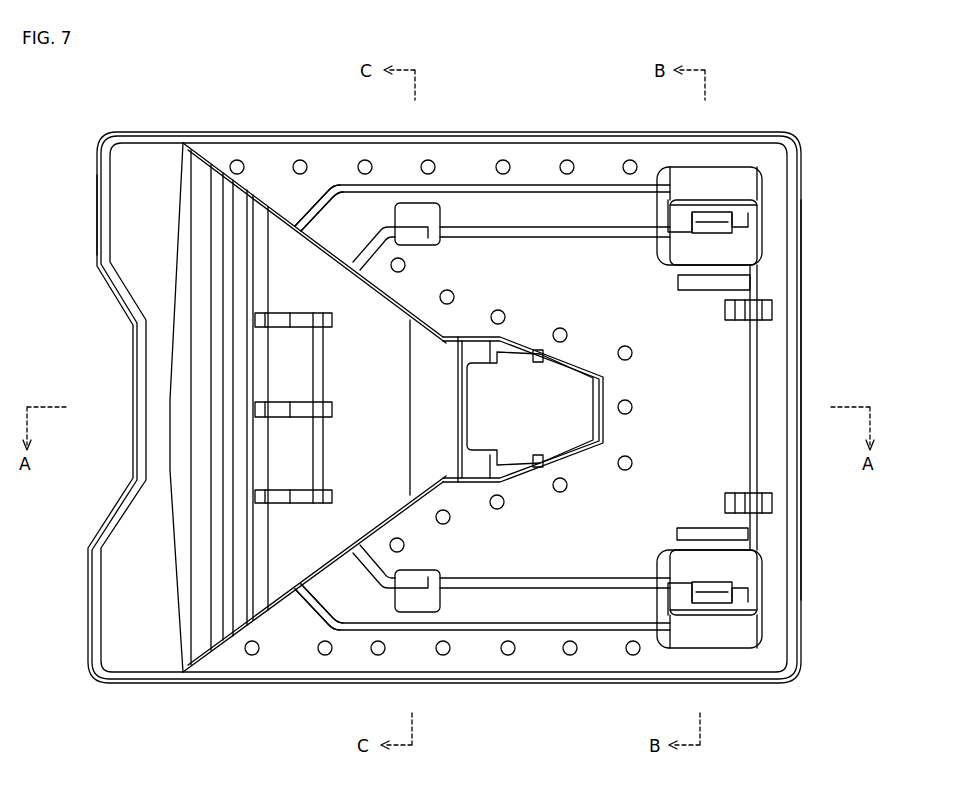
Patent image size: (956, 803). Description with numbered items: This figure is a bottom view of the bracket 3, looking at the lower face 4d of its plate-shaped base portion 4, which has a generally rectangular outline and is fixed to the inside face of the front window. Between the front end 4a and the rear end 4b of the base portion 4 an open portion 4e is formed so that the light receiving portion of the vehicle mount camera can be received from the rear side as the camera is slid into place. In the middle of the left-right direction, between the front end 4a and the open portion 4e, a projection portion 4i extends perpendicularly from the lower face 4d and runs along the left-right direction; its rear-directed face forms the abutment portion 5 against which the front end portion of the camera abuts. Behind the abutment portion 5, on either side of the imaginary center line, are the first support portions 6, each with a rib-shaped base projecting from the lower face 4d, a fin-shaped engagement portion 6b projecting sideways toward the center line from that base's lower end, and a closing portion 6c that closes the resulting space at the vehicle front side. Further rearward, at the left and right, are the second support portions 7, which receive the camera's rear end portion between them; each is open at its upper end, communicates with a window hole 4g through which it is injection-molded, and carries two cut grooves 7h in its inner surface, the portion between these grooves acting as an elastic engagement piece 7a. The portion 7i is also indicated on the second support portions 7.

The bracket 3 is at (818, 138).
The base portion 4 is at (532, 208).
The front end 4a is at (96, 212).
The rear end 4b is at (801, 286).
The lower face 4d is at (730, 372).
The open portion 4e is at (556, 418).
The window hole 4g is at (732, 253).
The projection portion 4i is at (325, 354).
The abutment portion 5 is at (325, 418).
The first support portion 6 is at (432, 210).
The engagement portion 6b is at (423, 607).
The closing portion 6c is at (376, 206).
The second support portion 7 is at (700, 178).
The elastic engagement piece 7a is at (705, 233).
The cut groove 7h is at (682, 208).
The clip base 7i is at (727, 175).